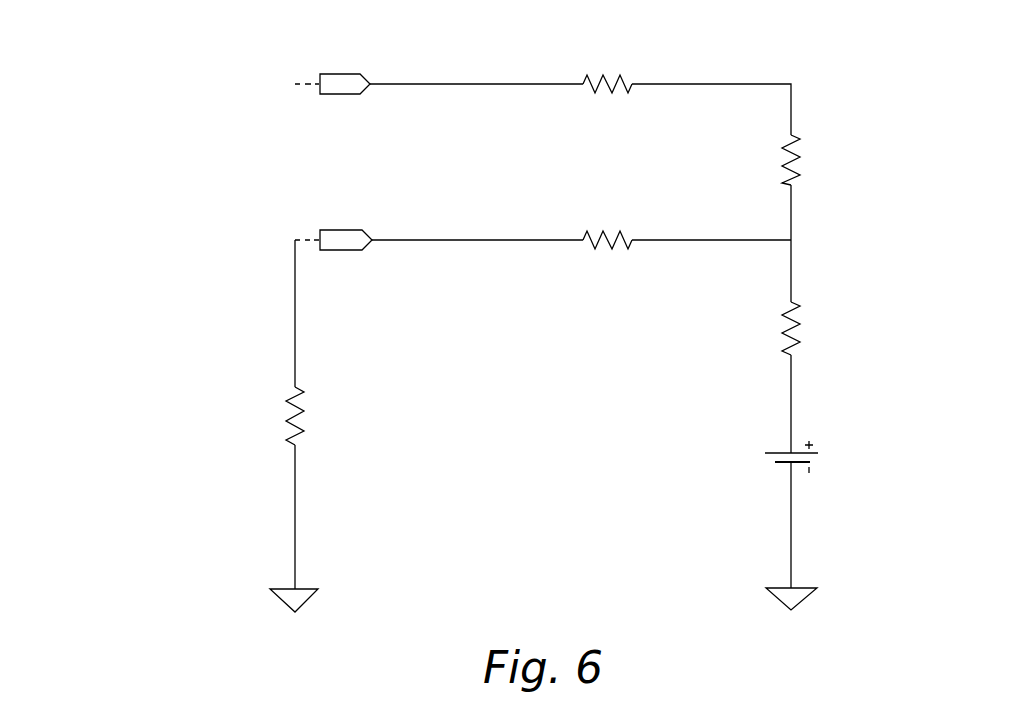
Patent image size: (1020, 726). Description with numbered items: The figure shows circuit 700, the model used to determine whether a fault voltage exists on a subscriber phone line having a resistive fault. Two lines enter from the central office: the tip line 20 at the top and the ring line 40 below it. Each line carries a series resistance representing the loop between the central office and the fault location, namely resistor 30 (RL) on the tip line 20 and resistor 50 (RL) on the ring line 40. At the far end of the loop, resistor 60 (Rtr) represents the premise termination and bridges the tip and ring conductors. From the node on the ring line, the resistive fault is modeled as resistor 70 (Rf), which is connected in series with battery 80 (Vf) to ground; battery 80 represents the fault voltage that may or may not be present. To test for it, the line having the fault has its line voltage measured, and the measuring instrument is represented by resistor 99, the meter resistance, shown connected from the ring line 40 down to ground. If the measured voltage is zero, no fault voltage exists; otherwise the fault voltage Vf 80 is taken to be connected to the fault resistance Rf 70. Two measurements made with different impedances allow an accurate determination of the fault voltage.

The circuit 700 is at (197, 59).
The tip line 20 is at (333, 73).
The tip resistance resistor 30 is at (607, 57).
The ring line 40 is at (345, 213).
The ring resistance resistor 50 is at (618, 212).
The premise termination resistor 60 is at (804, 158).
The fault resistance resistor 70 is at (804, 326).
The fault voltage battery 80 is at (828, 458).
The meter resistance resistor 99 is at (318, 414).